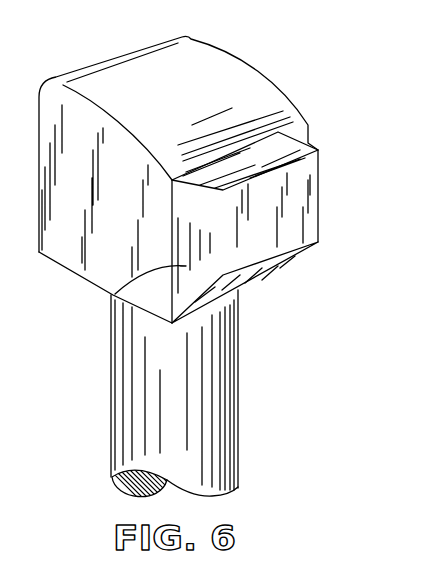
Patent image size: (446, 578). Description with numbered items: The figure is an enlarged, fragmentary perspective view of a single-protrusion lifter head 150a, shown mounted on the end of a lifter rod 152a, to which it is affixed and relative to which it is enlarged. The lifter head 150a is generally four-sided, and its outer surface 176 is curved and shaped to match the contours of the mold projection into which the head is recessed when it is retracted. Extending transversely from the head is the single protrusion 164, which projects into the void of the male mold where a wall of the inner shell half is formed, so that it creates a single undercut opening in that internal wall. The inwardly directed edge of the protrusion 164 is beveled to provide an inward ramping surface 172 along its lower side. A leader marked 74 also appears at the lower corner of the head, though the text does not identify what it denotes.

The lifter head 150a is at (281, 86).
The outer surface 176 is at (220, 66).
The protrusion 164 is at (318, 178).
The inward ramping surface 172 is at (270, 275).
The corner edge 74 is at (112, 296).
The lifter rod 152a is at (110, 384).